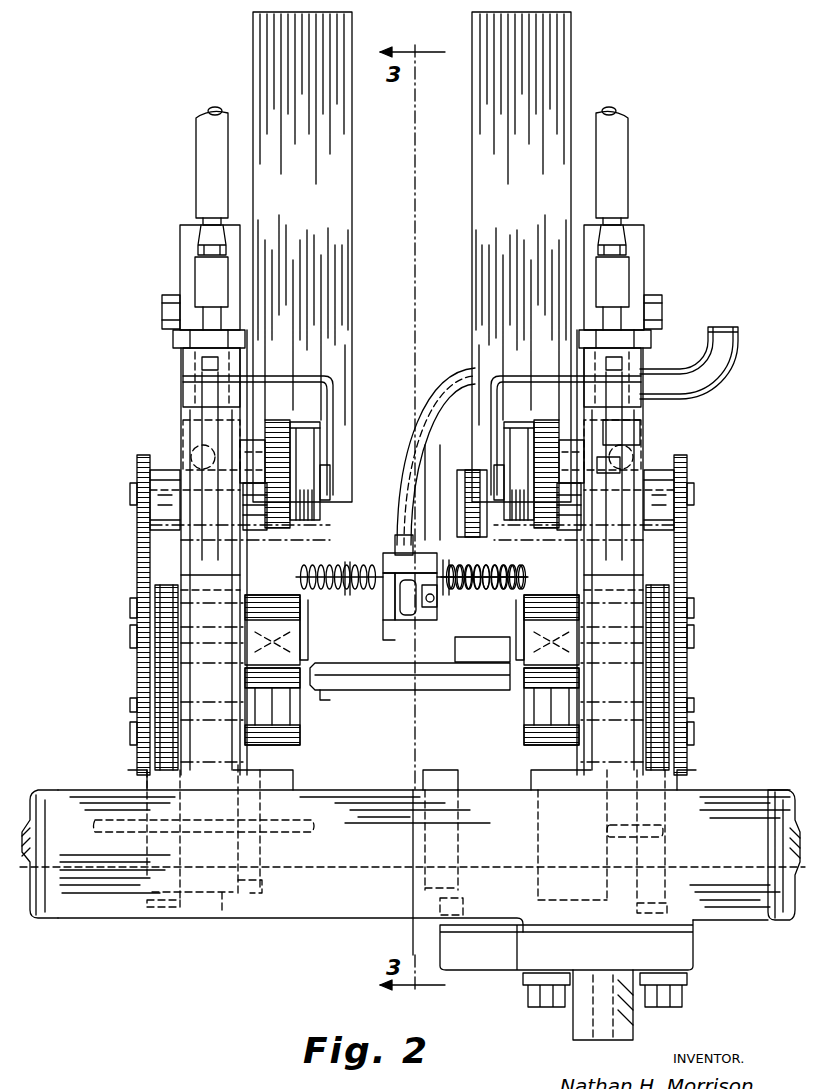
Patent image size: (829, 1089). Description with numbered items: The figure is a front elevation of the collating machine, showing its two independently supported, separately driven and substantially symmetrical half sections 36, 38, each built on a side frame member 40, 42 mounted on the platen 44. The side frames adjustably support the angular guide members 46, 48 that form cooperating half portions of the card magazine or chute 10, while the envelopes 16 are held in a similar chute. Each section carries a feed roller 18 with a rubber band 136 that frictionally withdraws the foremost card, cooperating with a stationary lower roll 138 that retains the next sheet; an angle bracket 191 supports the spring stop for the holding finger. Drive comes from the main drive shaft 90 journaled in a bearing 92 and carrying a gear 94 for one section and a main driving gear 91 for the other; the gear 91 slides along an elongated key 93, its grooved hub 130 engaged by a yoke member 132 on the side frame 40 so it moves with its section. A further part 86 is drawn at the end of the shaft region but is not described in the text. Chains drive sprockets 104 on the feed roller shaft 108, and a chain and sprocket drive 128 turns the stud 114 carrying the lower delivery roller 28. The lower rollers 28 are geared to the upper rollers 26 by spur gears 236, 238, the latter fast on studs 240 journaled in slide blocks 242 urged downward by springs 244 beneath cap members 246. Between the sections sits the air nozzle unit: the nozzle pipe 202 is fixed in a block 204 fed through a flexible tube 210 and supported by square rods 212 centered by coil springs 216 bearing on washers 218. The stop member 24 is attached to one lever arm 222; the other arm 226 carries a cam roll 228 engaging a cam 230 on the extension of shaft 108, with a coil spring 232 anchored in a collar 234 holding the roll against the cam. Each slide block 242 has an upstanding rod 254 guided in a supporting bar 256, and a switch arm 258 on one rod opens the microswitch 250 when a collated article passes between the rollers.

The magazine or feed chute 10 is at (583, 92).
The envelopes 16 is at (539, 430).
The feed roller 18 is at (297, 403).
The stop member 24 is at (418, 690).
The delivery roller 26 is at (245, 656).
The delivery roller 28 is at (245, 746).
The half section 36 is at (159, 165).
The half section 38 is at (683, 190).
The side frame member 40 is at (180, 262).
The side frame member 42 is at (640, 270).
The platen 44 is at (683, 953).
The angular guide member 46 is at (253, 40).
The angular guide member 48 is at (572, 52).
The base shaft 86 is at (726, 792).
The main drive shaft 90 is at (45, 792).
The main driving gear 91 is at (173, 915).
The bearing 92 is at (462, 757).
The elongated key 93 is at (197, 833).
The gear 94 is at (655, 915).
The sprocket 104 is at (163, 470).
The feed roller shaft 108 is at (130, 500).
The stud 114 is at (133, 705).
The chain and sprocket drive 128 is at (143, 727).
The grooved hub 130 is at (222, 915).
The yoke member 132 is at (262, 890).
The rubber band 136 is at (320, 430).
The lower roll 138 is at (322, 692).
The angle bracket 191 is at (336, 380).
The nozzle pipe 202 is at (388, 640).
The block 204 is at (390, 553).
The flexible tube 210 is at (462, 378).
The square rods 212 is at (362, 570).
The coil springs 216 is at (378, 605).
The washer 218 is at (392, 624).
The lever arm 222 is at (468, 630).
The lever arm 226 is at (398, 522).
The cam roll 228 is at (467, 441).
The cam 230 is at (398, 500).
The coil spring 232 is at (442, 640).
The collar 234 is at (430, 618).
The spur gear 236 is at (143, 687).
The spur gear 238 is at (153, 590).
The stud 240 is at (135, 634).
The slide block 242 is at (137, 610).
The spring 244 is at (187, 587).
The cap member 246 is at (181, 577).
The microswitch 250 is at (630, 443).
The upstanding rod 254 is at (205, 432).
The supporting bar 256 is at (640, 408).
The switch arm 258 is at (620, 467).